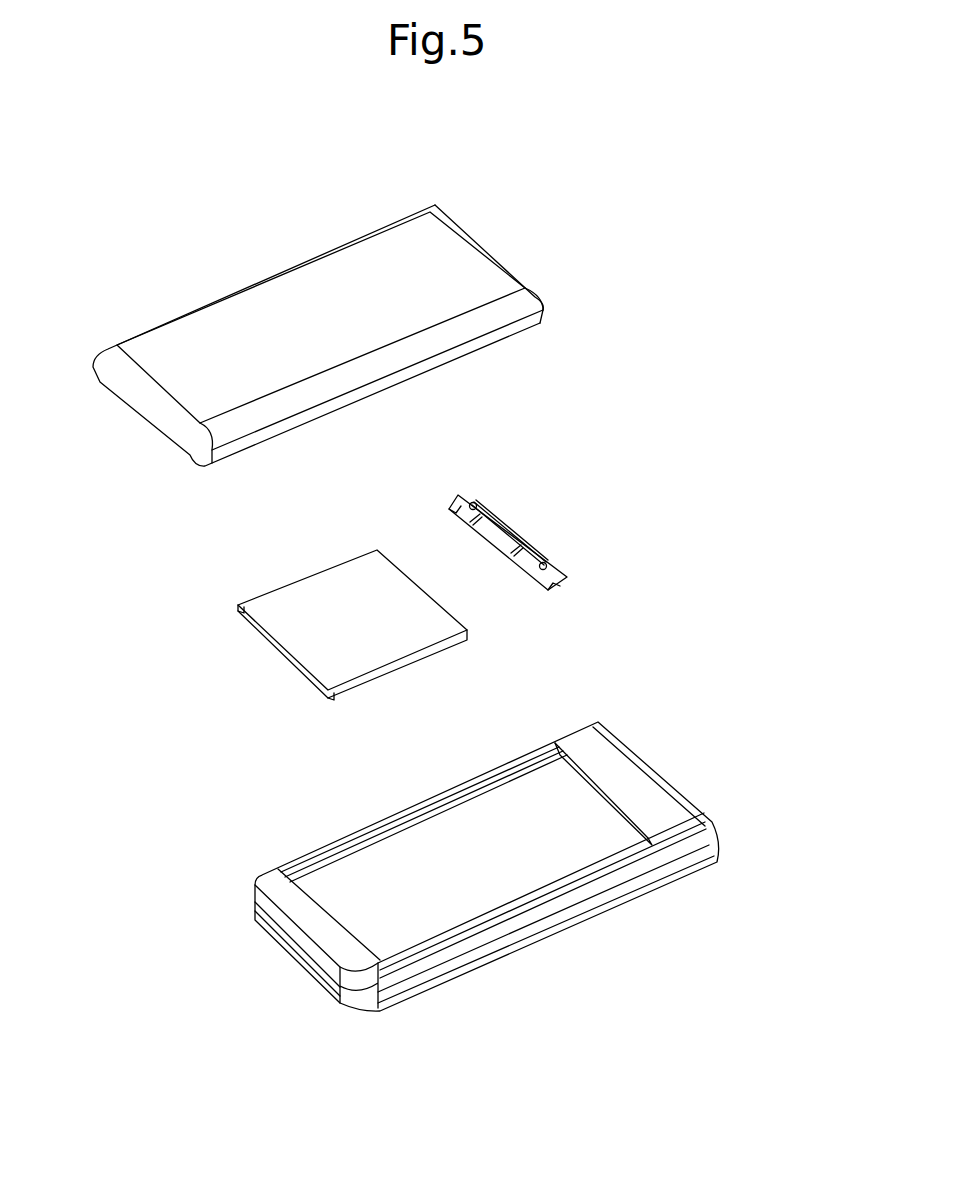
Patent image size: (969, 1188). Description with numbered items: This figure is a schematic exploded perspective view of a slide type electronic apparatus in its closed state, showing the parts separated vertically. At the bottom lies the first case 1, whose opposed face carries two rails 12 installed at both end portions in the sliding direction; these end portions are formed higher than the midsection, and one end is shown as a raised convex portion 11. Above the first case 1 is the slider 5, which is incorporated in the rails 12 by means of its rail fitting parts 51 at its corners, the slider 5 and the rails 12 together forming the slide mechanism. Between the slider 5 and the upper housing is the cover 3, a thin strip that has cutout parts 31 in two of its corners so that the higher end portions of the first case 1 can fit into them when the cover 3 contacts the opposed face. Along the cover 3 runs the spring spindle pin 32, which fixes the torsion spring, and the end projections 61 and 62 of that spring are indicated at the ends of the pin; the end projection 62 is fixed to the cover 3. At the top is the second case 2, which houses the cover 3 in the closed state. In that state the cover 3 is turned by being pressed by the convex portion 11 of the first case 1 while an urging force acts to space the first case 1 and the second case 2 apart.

The first case 1 is at (523, 940).
The convex portion 11 is at (640, 780).
The rail 12 is at (370, 830).
The second case 2 is at (292, 292).
The cover 3 is at (562, 582).
The cutout part 31 is at (450, 506).
The spring spindle pin 32 is at (503, 516).
The slider 5 is at (298, 637).
The rail fitting part 51 is at (240, 613).
The end projection 61 is at (475, 500).
The end projection 62 is at (483, 543).